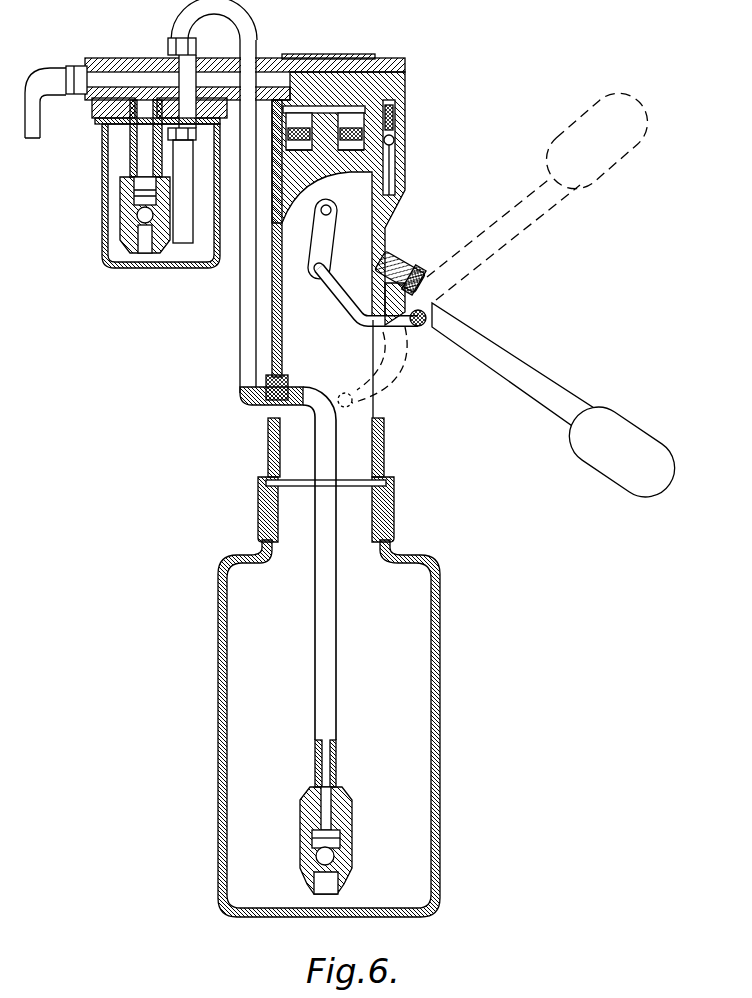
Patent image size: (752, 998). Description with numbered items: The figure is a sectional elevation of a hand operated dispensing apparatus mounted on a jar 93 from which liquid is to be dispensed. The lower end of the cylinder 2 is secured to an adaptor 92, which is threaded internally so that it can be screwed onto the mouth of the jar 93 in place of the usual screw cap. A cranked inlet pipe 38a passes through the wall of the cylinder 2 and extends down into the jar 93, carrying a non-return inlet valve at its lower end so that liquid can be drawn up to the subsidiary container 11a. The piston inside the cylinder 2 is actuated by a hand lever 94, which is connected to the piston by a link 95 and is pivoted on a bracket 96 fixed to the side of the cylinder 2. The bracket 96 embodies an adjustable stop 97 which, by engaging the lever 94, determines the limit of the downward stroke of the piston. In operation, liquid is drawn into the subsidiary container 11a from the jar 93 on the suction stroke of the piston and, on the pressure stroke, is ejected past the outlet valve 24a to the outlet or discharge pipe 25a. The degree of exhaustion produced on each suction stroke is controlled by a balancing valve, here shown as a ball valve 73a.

The outlet or discharge pipe 25a is at (45, 143).
The outlet valve 24a is at (132, 244).
The subsidiary container 11a is at (177, 268).
The ball valve 73a is at (403, 148).
The link 95 is at (328, 240).
The bracket 96 is at (392, 262).
The adjustable stop 97 is at (440, 282).
The cylinder 2 is at (280, 360).
The hand lever 94 is at (530, 395).
The adaptor 92 is at (393, 512).
The jar 93 is at (438, 624).
The delivery tube 38a is at (320, 647).